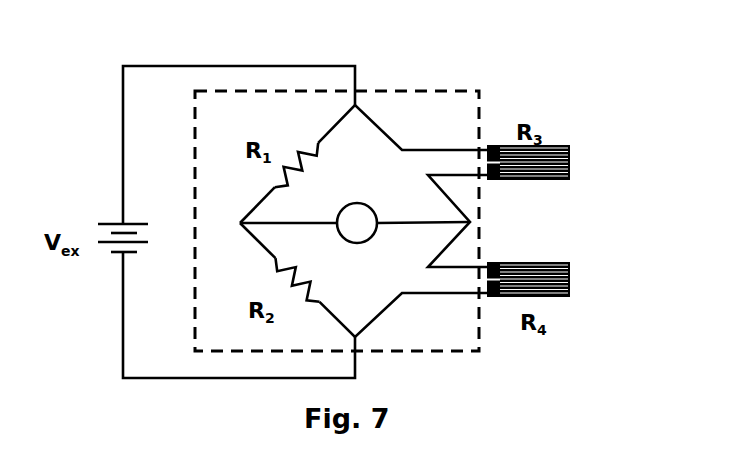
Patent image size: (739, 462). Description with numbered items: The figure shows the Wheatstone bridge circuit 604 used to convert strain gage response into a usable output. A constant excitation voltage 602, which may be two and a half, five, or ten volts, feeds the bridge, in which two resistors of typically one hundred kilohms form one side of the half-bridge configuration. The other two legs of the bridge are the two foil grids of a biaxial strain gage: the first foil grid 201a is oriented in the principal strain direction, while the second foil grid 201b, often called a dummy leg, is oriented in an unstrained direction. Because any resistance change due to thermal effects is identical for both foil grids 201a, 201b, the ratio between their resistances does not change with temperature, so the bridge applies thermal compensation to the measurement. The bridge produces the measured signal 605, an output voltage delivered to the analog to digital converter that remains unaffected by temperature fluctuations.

The excitation voltage 602 is at (108, 222).
The Wheatstone bridge circuit 604 is at (470, 90).
The measured signal 605 is at (363, 243).
The first foil grid 201a is at (553, 145).
The second foil grid 201b is at (553, 297).